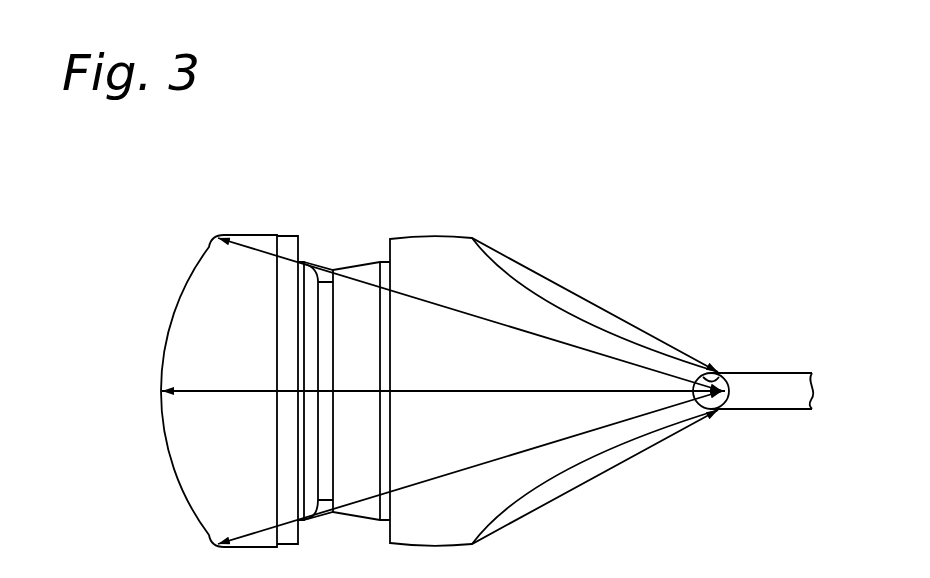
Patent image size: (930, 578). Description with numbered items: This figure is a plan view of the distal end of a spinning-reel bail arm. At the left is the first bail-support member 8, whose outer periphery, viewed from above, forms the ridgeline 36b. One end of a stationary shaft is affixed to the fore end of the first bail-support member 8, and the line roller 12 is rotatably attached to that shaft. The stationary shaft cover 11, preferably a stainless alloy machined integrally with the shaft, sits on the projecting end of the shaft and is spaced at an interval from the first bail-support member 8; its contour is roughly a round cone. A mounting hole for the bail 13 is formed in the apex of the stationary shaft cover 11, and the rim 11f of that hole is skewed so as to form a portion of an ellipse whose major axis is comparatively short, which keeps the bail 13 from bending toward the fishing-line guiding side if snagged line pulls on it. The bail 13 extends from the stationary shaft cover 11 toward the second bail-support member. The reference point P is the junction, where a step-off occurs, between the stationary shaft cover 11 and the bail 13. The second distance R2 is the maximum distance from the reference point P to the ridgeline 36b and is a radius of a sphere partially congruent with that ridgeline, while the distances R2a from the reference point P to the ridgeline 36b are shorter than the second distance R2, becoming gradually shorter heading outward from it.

The first bail-support member 8 is at (187, 308).
The ridgeline 36b is at (143, 408).
The line roller 12 is at (368, 273).
The stationary shaft cover 11 is at (525, 273).
The rim 11f is at (722, 373).
The bail 13 is at (773, 380).
The reference point P is at (731, 392).
The second distance R2 is at (490, 372).
The distances R2a is at (470, 391).